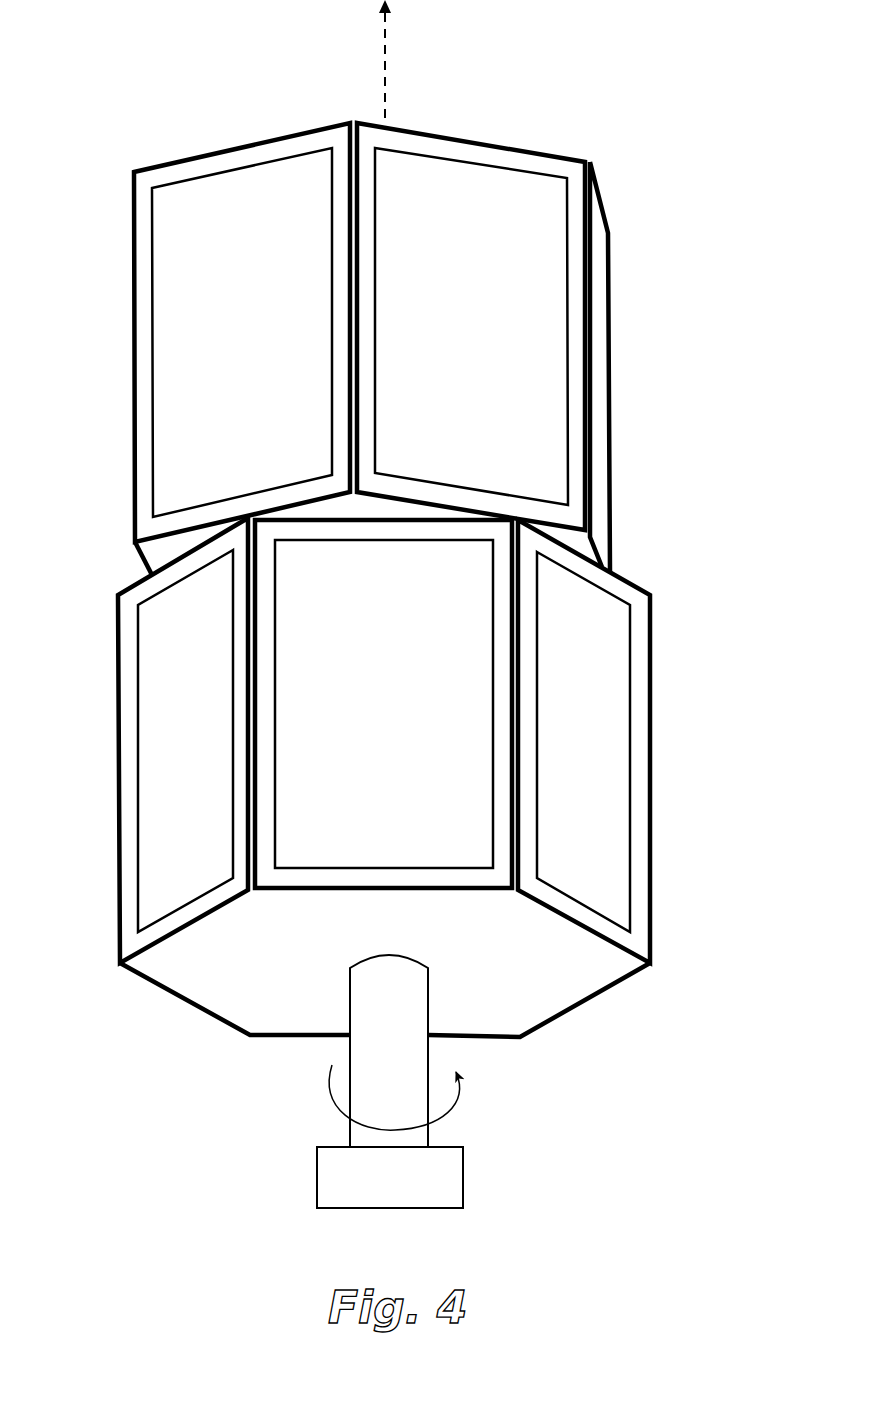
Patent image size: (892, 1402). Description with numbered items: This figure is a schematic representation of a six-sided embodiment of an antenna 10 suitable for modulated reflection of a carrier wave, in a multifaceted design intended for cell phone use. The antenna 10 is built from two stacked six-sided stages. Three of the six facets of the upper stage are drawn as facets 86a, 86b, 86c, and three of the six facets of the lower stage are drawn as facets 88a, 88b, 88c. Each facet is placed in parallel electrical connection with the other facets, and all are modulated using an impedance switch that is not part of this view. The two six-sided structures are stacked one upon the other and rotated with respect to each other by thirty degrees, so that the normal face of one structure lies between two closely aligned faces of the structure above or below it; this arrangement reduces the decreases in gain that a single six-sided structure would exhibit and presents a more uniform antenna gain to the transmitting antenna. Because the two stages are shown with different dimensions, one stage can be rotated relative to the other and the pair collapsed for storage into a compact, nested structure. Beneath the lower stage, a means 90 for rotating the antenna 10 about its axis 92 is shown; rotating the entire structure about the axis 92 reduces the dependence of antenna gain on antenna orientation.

The antenna 10 is at (615, 456).
The facet 86a is at (462, 192).
The facet 86b is at (235, 196).
The facet 86c is at (615, 290).
The facet 88a is at (589, 827).
The facet 88b is at (461, 780).
The facet 88c is at (166, 838).
The means for rotating 90 is at (405, 1196).
The axis 92 is at (390, 48).